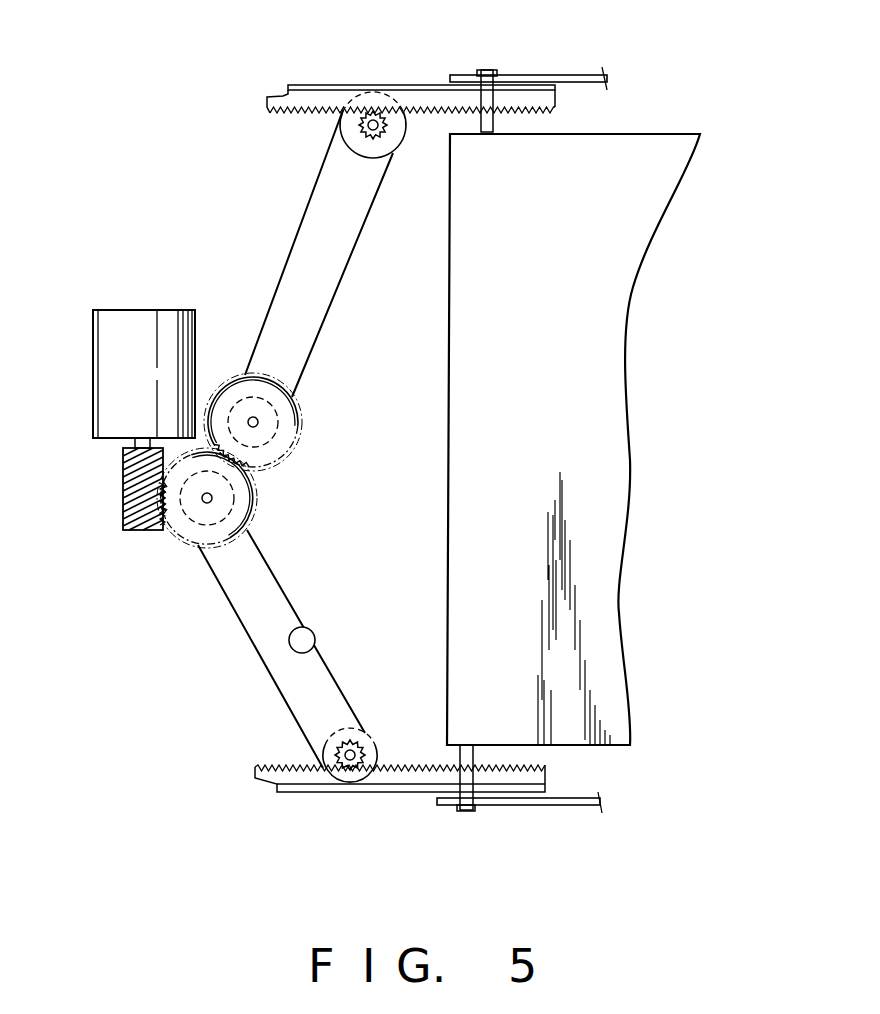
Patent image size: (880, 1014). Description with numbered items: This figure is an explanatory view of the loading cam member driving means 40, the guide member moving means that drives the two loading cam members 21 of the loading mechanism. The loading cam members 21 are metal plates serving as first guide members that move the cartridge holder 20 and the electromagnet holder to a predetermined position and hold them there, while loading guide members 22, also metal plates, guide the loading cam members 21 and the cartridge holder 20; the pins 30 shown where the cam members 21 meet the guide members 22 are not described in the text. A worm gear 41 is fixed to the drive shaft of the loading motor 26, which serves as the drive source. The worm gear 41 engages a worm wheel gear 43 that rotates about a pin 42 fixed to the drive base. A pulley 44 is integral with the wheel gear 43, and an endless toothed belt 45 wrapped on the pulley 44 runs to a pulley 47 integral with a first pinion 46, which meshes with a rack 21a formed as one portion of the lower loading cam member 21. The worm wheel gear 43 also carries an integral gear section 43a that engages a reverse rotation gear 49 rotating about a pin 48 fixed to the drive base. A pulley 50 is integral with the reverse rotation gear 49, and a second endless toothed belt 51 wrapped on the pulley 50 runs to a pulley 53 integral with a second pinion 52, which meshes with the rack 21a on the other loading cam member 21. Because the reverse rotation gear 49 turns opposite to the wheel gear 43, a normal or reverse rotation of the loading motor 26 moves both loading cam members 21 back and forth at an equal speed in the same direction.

The cartridge holder 20 is at (605, 563).
The loading cam member 21 is at (325, 85).
The rack 21a is at (300, 112).
The loading guide member 22 is at (560, 75).
The loading motor 26 is at (93, 362).
The guide pin 30 is at (497, 128).
The loading cam member driving means 40 is at (175, 630).
The worm gear 41 is at (123, 487).
The pin 42 is at (207, 523).
The worm wheel gear 43 is at (197, 537).
The gear section 43a is at (253, 503).
The pulley 44 is at (253, 543).
The toothed belt 45 is at (282, 617).
The first pinion 46 is at (366, 756).
The pulley 47 is at (353, 745).
The pin 48 is at (258, 423).
The reverse rotation gear 49 is at (298, 410).
The pulley 50 is at (263, 467).
The toothed belt 51 is at (357, 243).
The second pinion 52 is at (365, 128).
The pulley 53 is at (387, 148).